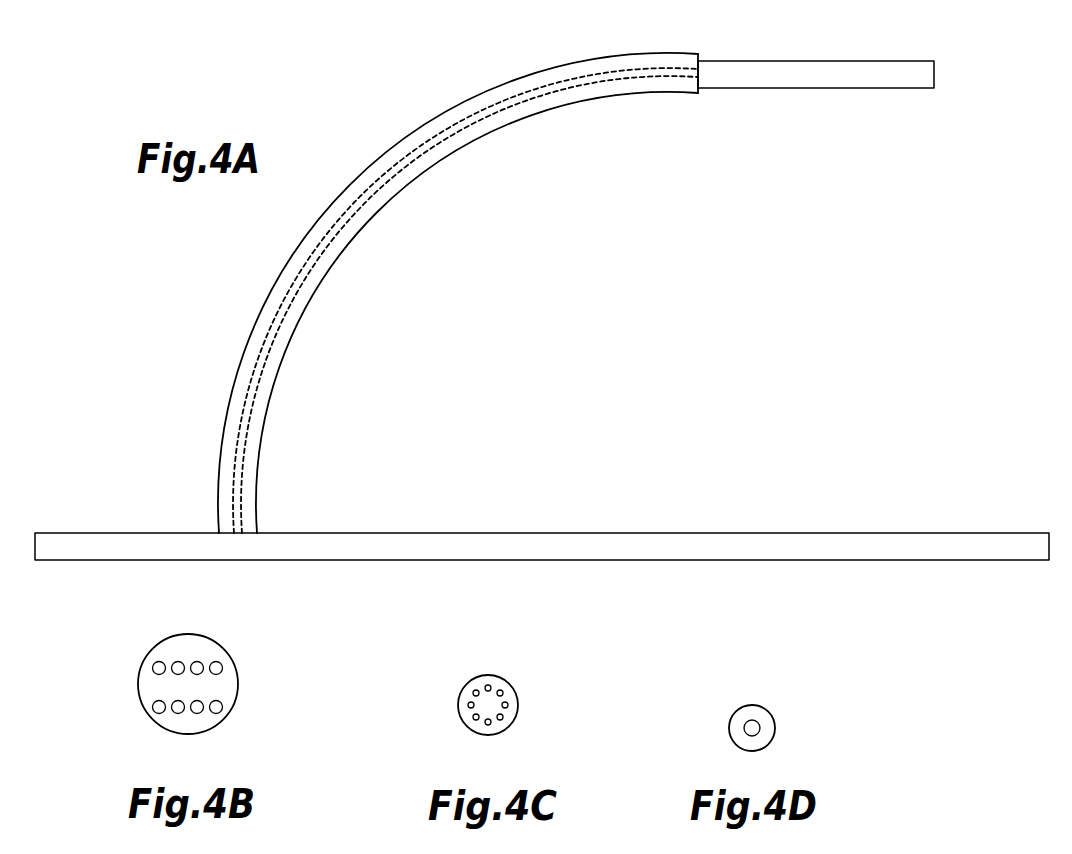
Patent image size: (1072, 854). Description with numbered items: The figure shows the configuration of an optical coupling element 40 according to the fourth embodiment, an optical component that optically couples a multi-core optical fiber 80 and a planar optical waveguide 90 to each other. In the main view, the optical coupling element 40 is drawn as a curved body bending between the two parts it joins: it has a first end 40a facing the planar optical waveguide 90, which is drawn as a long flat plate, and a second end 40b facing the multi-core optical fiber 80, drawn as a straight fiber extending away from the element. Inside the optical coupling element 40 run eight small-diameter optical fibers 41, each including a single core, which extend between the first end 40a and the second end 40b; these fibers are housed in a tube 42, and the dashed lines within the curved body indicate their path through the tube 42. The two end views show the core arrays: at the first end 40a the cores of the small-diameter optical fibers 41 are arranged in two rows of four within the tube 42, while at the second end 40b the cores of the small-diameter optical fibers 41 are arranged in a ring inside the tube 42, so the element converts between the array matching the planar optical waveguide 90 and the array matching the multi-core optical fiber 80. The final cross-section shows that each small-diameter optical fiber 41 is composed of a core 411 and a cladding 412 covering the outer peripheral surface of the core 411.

In FIG. 4A, the optical coupling element 40 is at (398, 70).
In FIG. 4A, the first end 40a is at (244, 533).
In FIG. 4B, the first end 40a is at (237, 642).
In FIG. 4A, the second end 40b is at (698, 73).
In FIG. 4C, the second end 40b is at (517, 716).
In FIG. 4A, the small-diameter optical fiber 41 is at (432, 148).
In FIG. 4B, the small-diameter optical fiber 41 is at (152, 708).
In FIG. 4C, the small-diameter optical fiber 41 is at (474, 718).
In FIG. 4D, the small-diameter optical fiber 41 is at (744, 706).
In FIG. 4A, the tube 42 is at (370, 164).
In FIG. 4B, the tube 42 is at (233, 707).
In FIG. 4C, the tube 42 is at (458, 700).
In FIG. 4A, the multi-core optical fiber 80 is at (854, 66).
In FIG. 4A, the planar optical waveguide 90 is at (779, 562).
In FIG. 4D, the core 411 is at (760, 726).
In FIG. 4D, the cladding 412 is at (769, 744).